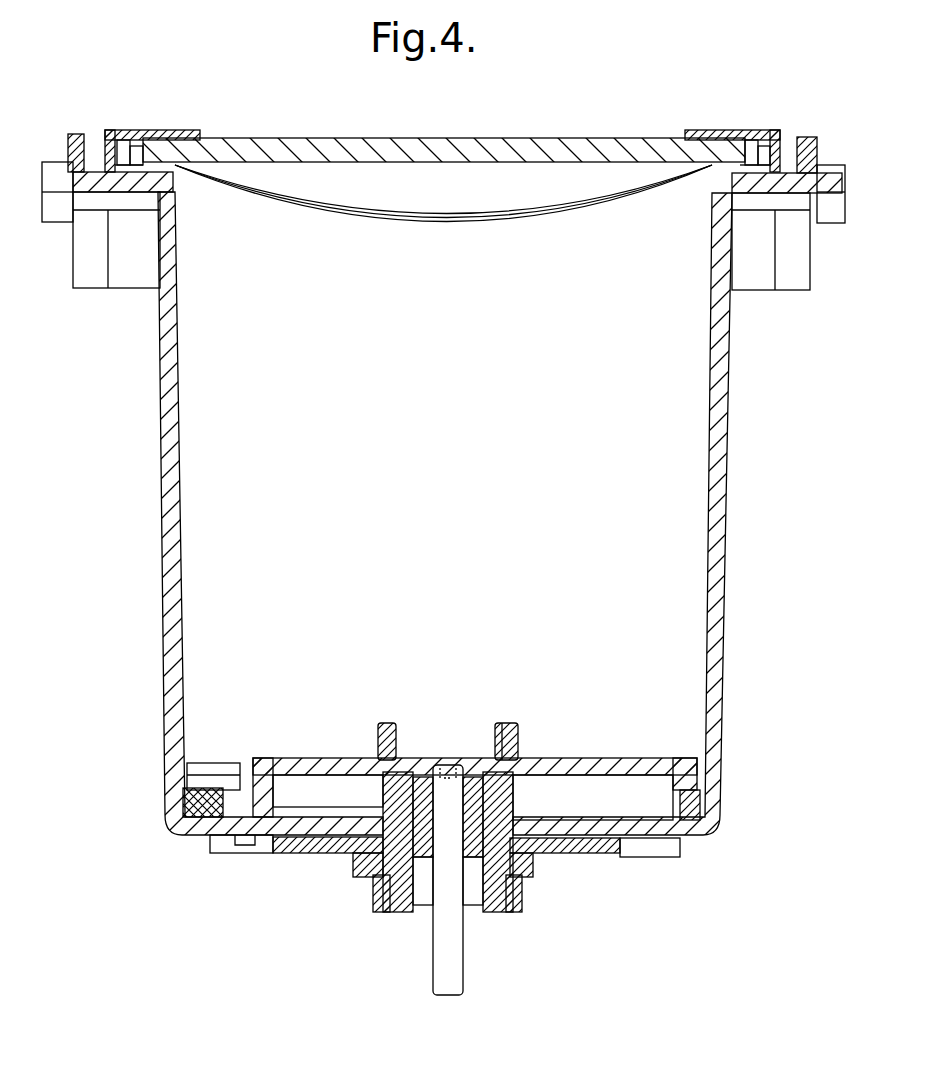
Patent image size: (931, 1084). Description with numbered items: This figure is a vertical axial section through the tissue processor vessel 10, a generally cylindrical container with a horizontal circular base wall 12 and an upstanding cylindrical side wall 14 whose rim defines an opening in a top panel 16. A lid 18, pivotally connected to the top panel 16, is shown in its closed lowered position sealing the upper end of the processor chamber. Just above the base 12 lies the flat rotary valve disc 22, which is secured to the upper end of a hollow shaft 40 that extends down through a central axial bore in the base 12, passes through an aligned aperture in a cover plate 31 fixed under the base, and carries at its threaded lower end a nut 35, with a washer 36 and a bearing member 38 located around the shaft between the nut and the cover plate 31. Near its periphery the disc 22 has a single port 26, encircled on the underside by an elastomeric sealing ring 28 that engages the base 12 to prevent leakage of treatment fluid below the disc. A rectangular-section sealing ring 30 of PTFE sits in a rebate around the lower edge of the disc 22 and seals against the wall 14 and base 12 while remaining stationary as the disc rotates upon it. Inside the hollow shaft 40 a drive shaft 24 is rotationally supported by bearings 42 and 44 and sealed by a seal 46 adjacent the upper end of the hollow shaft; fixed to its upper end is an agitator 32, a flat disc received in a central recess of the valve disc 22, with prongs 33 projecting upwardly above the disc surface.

The vessel 10 is at (738, 528).
The base wall 12 is at (628, 838).
The side wall 14 is at (158, 472).
The top panel 16 is at (790, 235).
The lid 18 is at (605, 150).
The rotary valve disc 22 is at (615, 757).
The shaft 24 is at (455, 965).
The port 26 is at (230, 788).
The sealing ring 28 is at (212, 830).
The sealing ring 30 is at (700, 805).
The cover plate 31 is at (300, 850).
The agitator 32 is at (470, 760).
The prongs 33 is at (386, 723).
The nut 35 is at (350, 855).
The washer 36 is at (372, 878).
The bearing member 38 is at (380, 915).
The hollow shaft 40 is at (530, 775).
The bearing 42 is at (418, 910).
The bearing 44 is at (480, 900).
The seal 46 is at (420, 770).